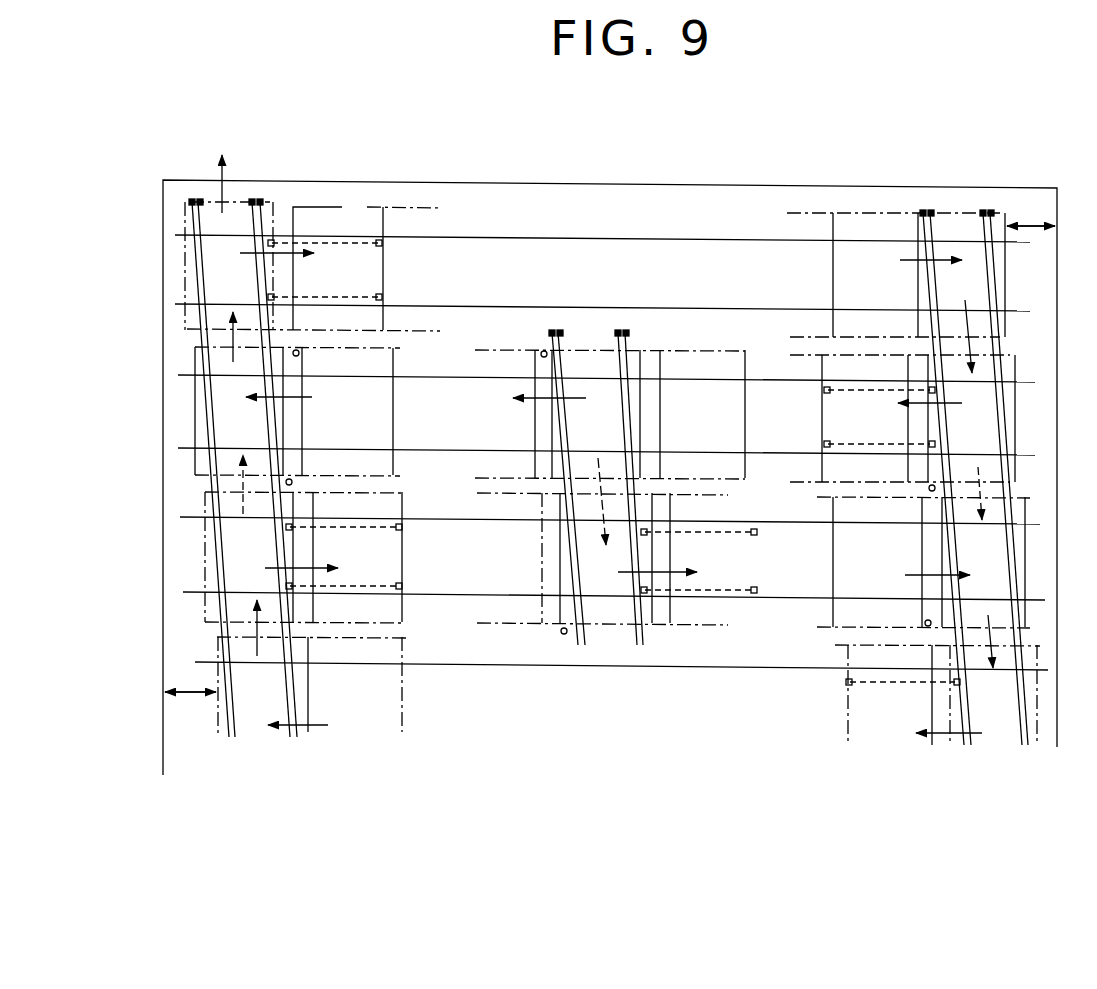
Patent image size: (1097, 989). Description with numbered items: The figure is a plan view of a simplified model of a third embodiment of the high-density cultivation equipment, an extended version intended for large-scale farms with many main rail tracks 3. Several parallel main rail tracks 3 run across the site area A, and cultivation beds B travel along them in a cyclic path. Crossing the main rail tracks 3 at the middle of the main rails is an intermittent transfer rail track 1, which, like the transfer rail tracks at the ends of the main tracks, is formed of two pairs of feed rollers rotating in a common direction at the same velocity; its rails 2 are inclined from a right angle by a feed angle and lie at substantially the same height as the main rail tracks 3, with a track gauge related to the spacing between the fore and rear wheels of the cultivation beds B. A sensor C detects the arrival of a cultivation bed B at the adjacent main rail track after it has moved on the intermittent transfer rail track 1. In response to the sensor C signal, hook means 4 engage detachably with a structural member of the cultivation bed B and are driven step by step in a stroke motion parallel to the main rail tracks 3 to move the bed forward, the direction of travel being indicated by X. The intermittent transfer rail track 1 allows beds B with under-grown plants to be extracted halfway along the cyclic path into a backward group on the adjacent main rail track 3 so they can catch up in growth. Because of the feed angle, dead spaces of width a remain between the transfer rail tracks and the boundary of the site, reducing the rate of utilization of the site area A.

The intermittent transfer rail track 1 is at (940, 280).
The rail 2 is at (252, 200).
The main rail track 3 is at (580, 238).
The hook means 4 is at (382, 244).
The site area A is at (641, 182).
The cultivation bed B is at (353, 206).
The sensor C is at (299, 354).
The direction X is at (204, 174).
The dead space width a is at (190, 696).